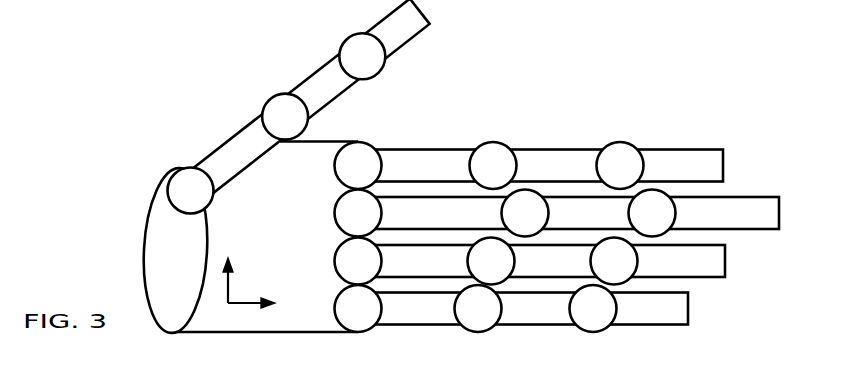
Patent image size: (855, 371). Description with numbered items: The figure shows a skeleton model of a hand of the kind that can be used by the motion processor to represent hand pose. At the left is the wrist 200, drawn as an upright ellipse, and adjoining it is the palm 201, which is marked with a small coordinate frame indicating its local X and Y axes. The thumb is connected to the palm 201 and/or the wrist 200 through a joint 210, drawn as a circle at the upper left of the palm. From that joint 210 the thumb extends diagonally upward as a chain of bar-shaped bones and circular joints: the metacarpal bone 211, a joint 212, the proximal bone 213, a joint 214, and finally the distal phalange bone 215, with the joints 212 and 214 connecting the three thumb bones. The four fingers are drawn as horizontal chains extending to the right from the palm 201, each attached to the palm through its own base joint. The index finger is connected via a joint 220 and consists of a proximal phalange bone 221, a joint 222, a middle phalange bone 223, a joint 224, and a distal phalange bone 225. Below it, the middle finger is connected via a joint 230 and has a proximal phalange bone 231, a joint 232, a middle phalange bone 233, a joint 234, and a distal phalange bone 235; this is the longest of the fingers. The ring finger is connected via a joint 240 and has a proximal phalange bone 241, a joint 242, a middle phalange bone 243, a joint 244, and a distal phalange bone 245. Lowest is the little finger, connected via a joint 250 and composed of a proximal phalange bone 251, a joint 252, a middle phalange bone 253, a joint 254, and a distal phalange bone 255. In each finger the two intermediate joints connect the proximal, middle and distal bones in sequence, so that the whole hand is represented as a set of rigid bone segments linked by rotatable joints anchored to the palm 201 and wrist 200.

The wrist 200 is at (192, 262).
The palm 201 is at (280, 248).
The joint 210 is at (206, 200).
The metacarpal bone 211 is at (238, 153).
The joint 212 is at (300, 127).
The proximal bone 213 is at (323, 87).
The joint 214 is at (377, 66).
The distal phalange bone 215 is at (390, 34).
The joint 220 is at (373, 176).
The proximal phalange bone 221 is at (443, 176).
The joint 222 is at (508, 176).
The middle phalange bone 223 is at (570, 176).
The joint 224 is at (635, 176).
The distal phalange bone 225 is at (695, 176).
The joint 230 is at (373, 223).
The proximal phalange bone 231 is at (458, 223).
The joint 232 is at (540, 223).
The middle phalange bone 233 is at (613, 223).
The joint 234 is at (667, 223).
The distal phalange bone 235 is at (740, 223).
The joint 240 is at (373, 271).
The proximal phalange bone 241 is at (439, 271).
The joint 242 is at (506, 271).
The middle phalange bone 243 is at (571, 271).
The joint 244 is at (629, 271).
The distal phalange bone 245 is at (693, 271).
The joint 250 is at (373, 318).
The proximal phalange bone 251 is at (432, 318).
The joint 252 is at (493, 318).
The middle phalange bone 253 is at (549, 318).
The joint 254 is at (608, 318).
The distal phalange bone 255 is at (664, 318).